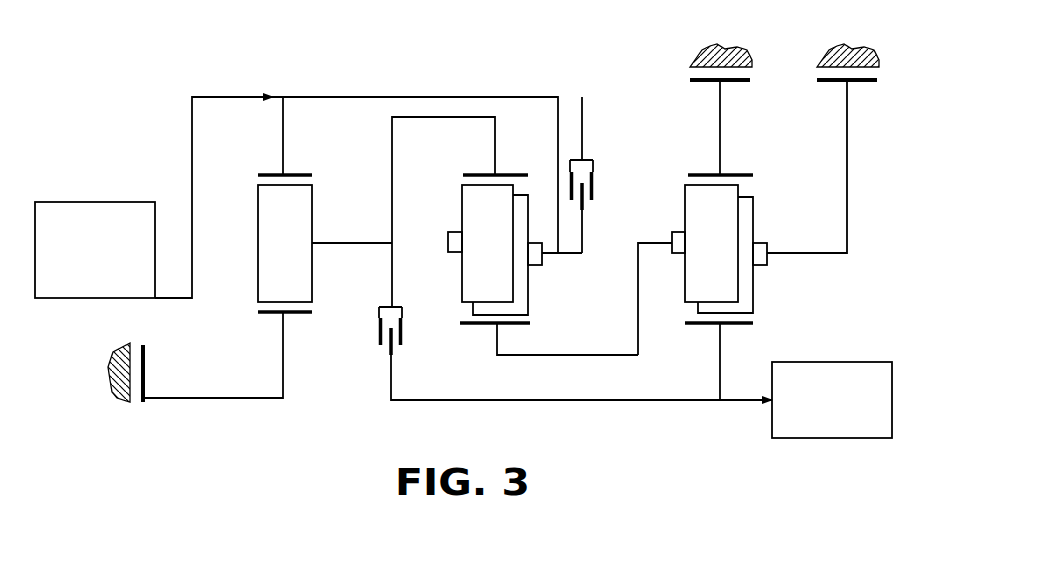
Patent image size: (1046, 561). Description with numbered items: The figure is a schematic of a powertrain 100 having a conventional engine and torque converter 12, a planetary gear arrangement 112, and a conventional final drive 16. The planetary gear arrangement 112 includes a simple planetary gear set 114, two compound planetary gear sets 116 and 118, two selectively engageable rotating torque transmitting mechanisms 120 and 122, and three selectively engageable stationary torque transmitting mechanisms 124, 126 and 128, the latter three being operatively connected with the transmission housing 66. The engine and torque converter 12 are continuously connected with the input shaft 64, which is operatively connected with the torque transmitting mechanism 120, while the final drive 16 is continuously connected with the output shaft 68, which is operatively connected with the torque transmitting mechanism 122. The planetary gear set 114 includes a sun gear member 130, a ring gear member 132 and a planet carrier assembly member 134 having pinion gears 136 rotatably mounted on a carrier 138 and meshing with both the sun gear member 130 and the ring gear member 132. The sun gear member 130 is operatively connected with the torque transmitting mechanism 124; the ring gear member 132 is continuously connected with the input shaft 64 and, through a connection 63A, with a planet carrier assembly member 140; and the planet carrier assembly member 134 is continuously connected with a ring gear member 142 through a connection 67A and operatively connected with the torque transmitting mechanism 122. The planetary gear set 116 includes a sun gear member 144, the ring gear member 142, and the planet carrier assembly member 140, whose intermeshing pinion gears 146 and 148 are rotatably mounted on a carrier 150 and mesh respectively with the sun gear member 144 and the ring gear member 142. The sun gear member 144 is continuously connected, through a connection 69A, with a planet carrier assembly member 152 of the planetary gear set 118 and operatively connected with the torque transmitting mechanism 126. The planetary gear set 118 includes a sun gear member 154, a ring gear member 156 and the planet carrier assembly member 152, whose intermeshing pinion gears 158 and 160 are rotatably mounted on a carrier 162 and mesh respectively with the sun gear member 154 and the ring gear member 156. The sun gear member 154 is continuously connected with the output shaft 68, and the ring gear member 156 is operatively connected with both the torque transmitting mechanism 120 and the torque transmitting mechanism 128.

The powertrain 100 is at (127, 126).
The engine and torque converter 12 is at (102, 200).
The final drive 16 is at (833, 360).
The connection 63A is at (302, 97).
The input shaft 64 is at (173, 298).
The transmission housing 66 is at (110, 363).
The connection 67A is at (443, 117).
The output shaft 68 is at (738, 398).
The connection 69A is at (518, 355).
The planetary gear arrangement 112 is at (432, 83).
The simple planetary gear set 114 is at (298, 328).
The compound planetary gear set 116 is at (535, 333).
The compound planetary gear set 118 is at (733, 337).
The rotating torque transmitting mechanism 120 is at (573, 153).
The rotating torque transmitting mechanism 122 is at (383, 360).
The stationary torque transmitting mechanism 124 is at (117, 393).
The stationary torque transmitting mechanism 126 is at (878, 72).
The stationary torque transmitting mechanism 128 is at (688, 72).
The sun gear member 130 is at (277, 320).
The ring gear member 132 is at (267, 173).
The planet carrier assembly member 134 is at (318, 218).
The pinion gears 136 is at (263, 265).
The carrier 138 is at (348, 243).
The planet carrier assembly member 140 is at (455, 270).
The ring gear member 142 is at (472, 172).
The sun gear member 144 is at (485, 325).
The pinion gears 146 is at (518, 307).
The pinion gears 148 is at (467, 208).
The carrier 150 is at (543, 256).
The planet carrier assembly member 152 is at (757, 217).
The sun gear member 154 is at (707, 327).
The ring gear member 156 is at (733, 170).
The pinion gears 158 is at (750, 287).
The pinion gears 160 is at (692, 205).
The carrier 162 is at (825, 255).